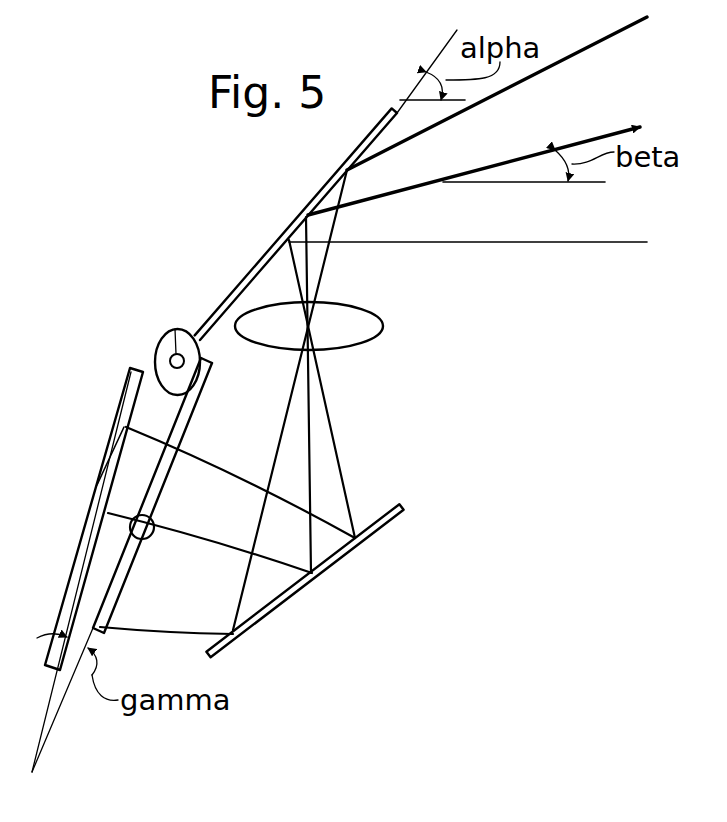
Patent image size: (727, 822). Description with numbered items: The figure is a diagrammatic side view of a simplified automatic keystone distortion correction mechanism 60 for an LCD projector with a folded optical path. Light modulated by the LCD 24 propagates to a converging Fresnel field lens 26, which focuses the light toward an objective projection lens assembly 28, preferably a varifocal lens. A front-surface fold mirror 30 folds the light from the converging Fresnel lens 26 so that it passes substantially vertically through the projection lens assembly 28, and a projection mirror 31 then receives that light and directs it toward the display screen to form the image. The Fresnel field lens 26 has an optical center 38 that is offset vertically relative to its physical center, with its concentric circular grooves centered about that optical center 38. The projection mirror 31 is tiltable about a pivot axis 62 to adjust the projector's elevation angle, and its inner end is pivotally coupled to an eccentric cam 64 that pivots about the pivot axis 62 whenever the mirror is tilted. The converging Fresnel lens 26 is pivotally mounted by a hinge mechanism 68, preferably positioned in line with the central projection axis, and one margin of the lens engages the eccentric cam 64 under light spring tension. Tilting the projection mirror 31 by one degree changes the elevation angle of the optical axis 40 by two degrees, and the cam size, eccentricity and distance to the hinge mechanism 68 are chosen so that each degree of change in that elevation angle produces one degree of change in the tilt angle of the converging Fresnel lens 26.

The LCD 24 is at (93, 495).
The converging Fresnel field lens 26 is at (130, 568).
The projection lens assembly 28 is at (370, 323).
The fold mirror 30 is at (333, 572).
The projection mirror 31 is at (312, 196).
The optical center 38 is at (157, 488).
The optical axis 40 is at (200, 538).
The automatic keystone distortion correction mechanism 60 is at (137, 338).
The pivot axis 62 is at (173, 328).
The eccentric cam 64 is at (176, 385).
The hinge mechanism 68 is at (142, 527).